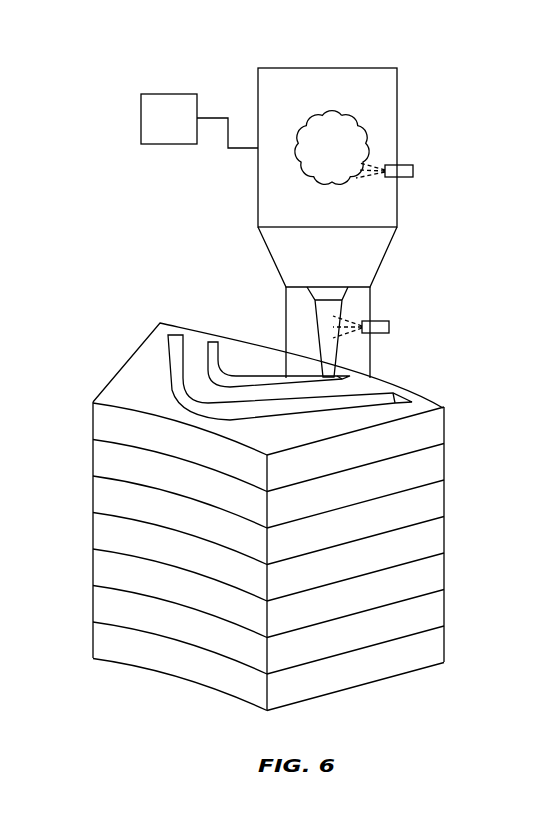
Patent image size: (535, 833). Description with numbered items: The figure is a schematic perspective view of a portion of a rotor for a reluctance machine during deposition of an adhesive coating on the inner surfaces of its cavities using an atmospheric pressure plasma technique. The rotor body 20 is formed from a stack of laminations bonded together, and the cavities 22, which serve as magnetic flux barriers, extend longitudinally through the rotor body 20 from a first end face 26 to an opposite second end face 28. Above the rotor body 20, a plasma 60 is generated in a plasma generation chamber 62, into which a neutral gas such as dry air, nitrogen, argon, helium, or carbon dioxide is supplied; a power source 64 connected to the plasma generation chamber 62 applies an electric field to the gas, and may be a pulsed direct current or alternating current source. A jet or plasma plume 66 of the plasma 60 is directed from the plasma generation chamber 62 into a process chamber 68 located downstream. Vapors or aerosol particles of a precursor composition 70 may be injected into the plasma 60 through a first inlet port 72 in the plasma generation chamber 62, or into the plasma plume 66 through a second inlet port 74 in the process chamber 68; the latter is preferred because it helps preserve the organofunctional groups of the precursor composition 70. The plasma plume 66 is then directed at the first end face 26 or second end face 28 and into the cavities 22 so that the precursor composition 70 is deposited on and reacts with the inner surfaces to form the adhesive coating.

The rotor body 20 is at (93, 604).
The cavities 22 is at (173, 333).
The first end face 26 is at (258, 365).
The second end face 28 is at (128, 383).
The plasma 60 is at (343, 157).
The plasma generation chamber 62 is at (345, 68).
The power source 64 is at (181, 128).
The plasma plume 66 is at (315, 327).
The process chamber 68 is at (370, 300).
The precursor composition 70 is at (365, 180).
The first inlet port 72 is at (408, 165).
The second inlet port 74 is at (389, 327).